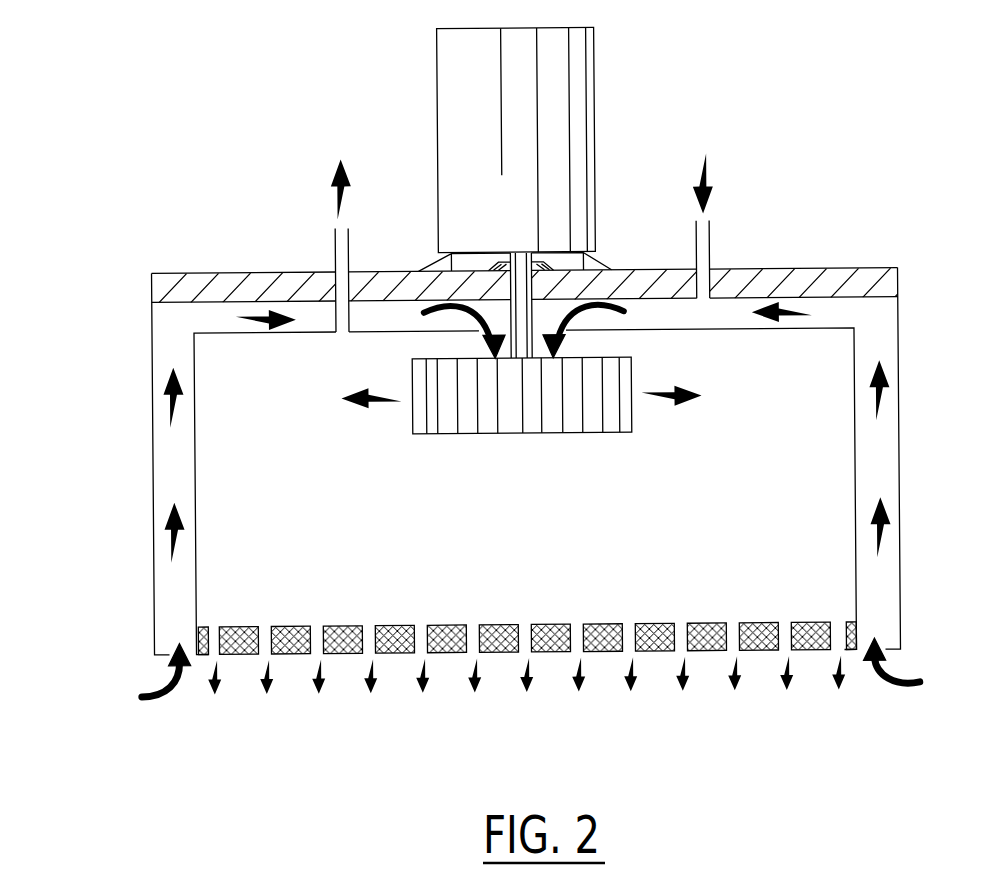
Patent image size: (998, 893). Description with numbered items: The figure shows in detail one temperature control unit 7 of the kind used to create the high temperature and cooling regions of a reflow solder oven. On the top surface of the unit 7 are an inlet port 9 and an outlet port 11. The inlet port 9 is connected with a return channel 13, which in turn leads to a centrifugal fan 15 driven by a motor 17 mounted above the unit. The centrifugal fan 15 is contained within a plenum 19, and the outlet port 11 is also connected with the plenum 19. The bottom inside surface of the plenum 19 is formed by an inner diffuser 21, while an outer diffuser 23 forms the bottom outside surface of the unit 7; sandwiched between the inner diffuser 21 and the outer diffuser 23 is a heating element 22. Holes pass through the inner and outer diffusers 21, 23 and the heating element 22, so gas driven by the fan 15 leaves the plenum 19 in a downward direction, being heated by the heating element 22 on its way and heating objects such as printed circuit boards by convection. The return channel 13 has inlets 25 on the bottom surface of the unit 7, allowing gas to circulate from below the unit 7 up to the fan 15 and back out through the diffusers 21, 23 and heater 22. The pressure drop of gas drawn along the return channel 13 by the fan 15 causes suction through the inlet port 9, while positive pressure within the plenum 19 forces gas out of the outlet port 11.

The temperature control unit 7 is at (125, 222).
The inlet port 9 is at (711, 258).
The outlet port 11 is at (337, 252).
The return channel 13 is at (882, 446).
The centrifugal fan 15 is at (490, 430).
The motor 17 is at (578, 60).
The plenum 19 is at (276, 456).
The inner diffuser 21 is at (297, 625).
The heating element 22 is at (287, 655).
The outer diffuser 23 is at (363, 637).
The inlets 25 is at (187, 650).